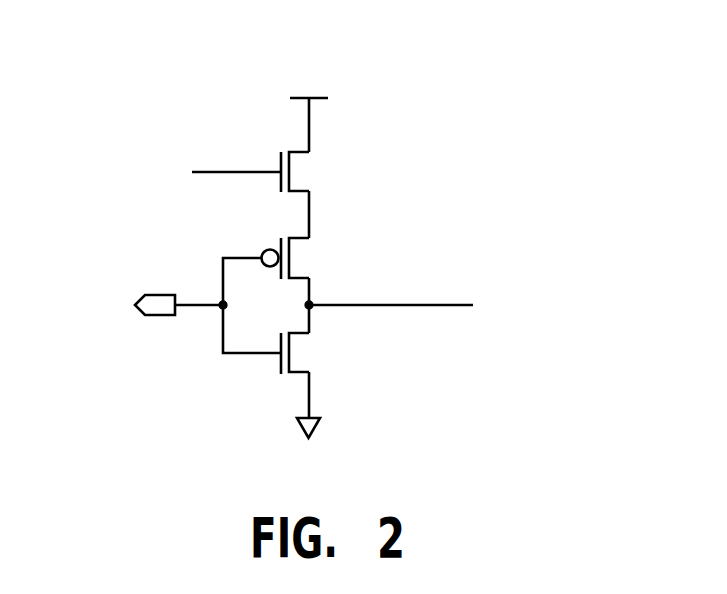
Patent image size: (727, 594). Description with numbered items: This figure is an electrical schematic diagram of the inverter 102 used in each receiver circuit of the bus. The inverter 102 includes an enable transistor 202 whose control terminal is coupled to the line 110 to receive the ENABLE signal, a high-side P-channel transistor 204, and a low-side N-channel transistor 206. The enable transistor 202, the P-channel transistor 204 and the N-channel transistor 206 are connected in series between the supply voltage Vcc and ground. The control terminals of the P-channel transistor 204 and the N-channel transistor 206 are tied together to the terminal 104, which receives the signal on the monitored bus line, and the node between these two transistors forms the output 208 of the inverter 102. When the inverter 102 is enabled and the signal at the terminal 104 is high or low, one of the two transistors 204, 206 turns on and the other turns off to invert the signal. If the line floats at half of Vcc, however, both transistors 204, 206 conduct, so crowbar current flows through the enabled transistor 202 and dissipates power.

The inverter 102 is at (466, 152).
The line 110 is at (229, 168).
The enable transistor 202 is at (309, 173).
The high-side P-channel transistor 204 is at (309, 258).
The low-side N-channel transistor 206 is at (309, 354).
The terminal 104 is at (152, 293).
The output line 208 is at (450, 303).